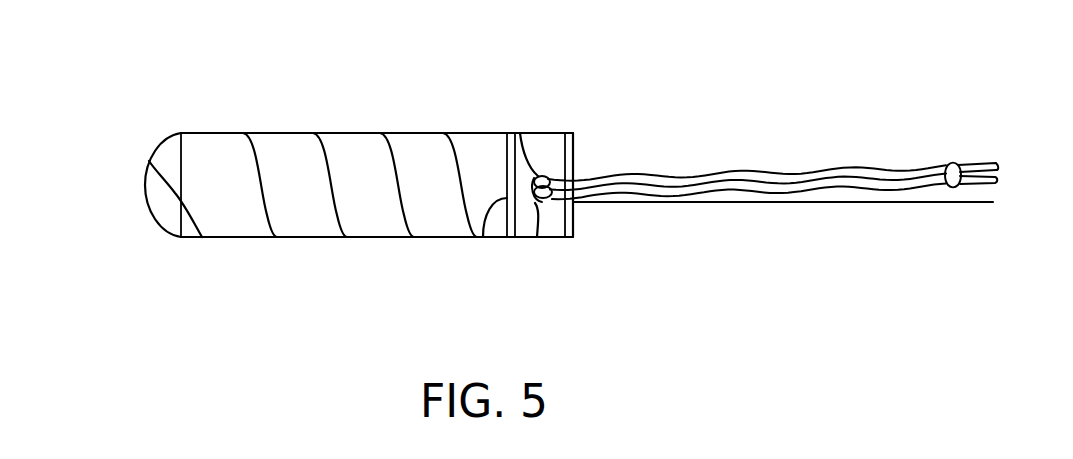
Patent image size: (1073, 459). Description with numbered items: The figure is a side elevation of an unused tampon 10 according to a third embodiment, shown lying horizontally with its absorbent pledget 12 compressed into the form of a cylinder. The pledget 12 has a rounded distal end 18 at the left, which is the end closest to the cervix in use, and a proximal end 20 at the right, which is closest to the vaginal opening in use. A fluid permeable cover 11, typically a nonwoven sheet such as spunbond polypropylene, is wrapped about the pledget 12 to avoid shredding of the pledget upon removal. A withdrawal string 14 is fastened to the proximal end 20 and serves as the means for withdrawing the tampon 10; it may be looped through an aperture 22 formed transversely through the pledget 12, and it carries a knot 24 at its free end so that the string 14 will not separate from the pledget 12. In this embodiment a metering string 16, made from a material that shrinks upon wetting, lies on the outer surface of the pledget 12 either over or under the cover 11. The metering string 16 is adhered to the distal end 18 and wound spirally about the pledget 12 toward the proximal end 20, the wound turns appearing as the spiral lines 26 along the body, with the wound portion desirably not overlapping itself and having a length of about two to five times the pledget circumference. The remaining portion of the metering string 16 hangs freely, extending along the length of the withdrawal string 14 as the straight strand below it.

The tampon 10 is at (376, 175).
The fluid permeable cover 11 is at (209, 147).
The absorbent pledget 12 is at (162, 161).
The withdrawal string 14 is at (501, 197).
The metering string 16 is at (735, 202).
The distal end 18 is at (166, 207).
The proximal end 20 is at (577, 152).
The aperture 22 is at (537, 237).
The knot 24 is at (957, 162).
The spiral groove 26 is at (238, 232).